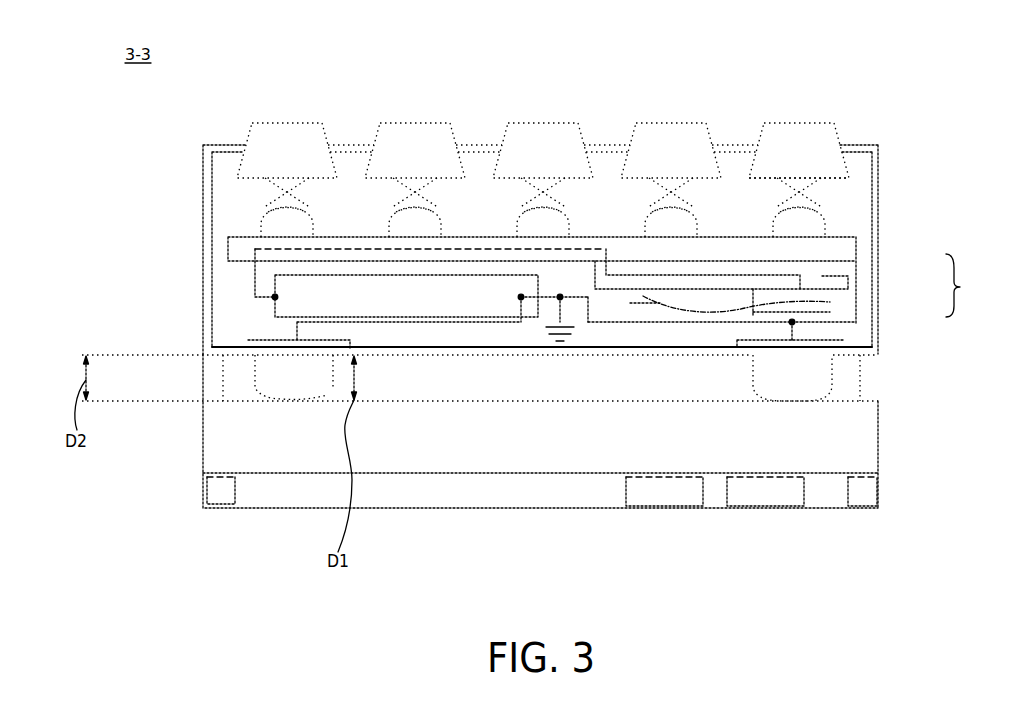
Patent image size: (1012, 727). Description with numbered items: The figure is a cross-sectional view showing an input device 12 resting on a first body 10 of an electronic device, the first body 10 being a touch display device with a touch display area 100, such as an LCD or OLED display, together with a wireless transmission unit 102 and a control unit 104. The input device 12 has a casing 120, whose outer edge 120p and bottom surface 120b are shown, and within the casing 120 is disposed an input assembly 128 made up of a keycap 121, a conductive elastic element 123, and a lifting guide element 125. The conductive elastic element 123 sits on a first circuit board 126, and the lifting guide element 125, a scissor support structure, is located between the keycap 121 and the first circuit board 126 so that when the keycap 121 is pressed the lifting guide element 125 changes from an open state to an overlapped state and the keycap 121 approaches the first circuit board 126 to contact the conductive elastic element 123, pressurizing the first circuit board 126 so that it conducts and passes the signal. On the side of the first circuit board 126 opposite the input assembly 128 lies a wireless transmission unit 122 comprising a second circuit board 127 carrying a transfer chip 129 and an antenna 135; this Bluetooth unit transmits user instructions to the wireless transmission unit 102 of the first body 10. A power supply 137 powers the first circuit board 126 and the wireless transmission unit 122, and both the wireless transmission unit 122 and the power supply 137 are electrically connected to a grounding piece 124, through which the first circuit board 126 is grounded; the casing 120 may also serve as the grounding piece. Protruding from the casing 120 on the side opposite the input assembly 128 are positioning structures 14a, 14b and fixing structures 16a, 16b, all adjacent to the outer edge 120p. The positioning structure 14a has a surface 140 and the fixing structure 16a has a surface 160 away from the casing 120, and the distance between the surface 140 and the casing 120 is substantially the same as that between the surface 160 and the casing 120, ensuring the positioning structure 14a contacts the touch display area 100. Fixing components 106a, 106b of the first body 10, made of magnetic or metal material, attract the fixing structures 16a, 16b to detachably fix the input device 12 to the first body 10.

The input device 12 is at (168, 166).
The first body 10 is at (170, 420).
The touch display area 100 is at (875, 420).
The wireless transmission unit 102 is at (763, 506).
The control unit 104 is at (662, 506).
The fixing component 106a is at (208, 490).
The fixing component 106b is at (877, 489).
The casing 120 is at (228, 145).
The outer edge 120p is at (207, 212).
The bottom surface 120b is at (387, 353).
The keycap 121 is at (795, 133).
The wireless transmission unit 122 is at (968, 285).
The conductive elastic element 123 is at (813, 225).
The grounding piece 124 is at (248, 343).
The lifting guide element 125 is at (810, 201).
The first circuit board 126 is at (833, 248).
The second circuit board 127 is at (837, 267).
The input assembly 128 is at (858, 185).
The transfer chip 129 is at (817, 297).
The antenna 135 is at (817, 305).
The power supply 137 is at (277, 310).
The positioning structure 14a is at (273, 370).
The positioning structure 14b is at (813, 368).
The fixing structure 16a is at (212, 365).
The fixing structure 16b is at (875, 388).
The surface 140 is at (328, 395).
The surface 160 is at (217, 402).